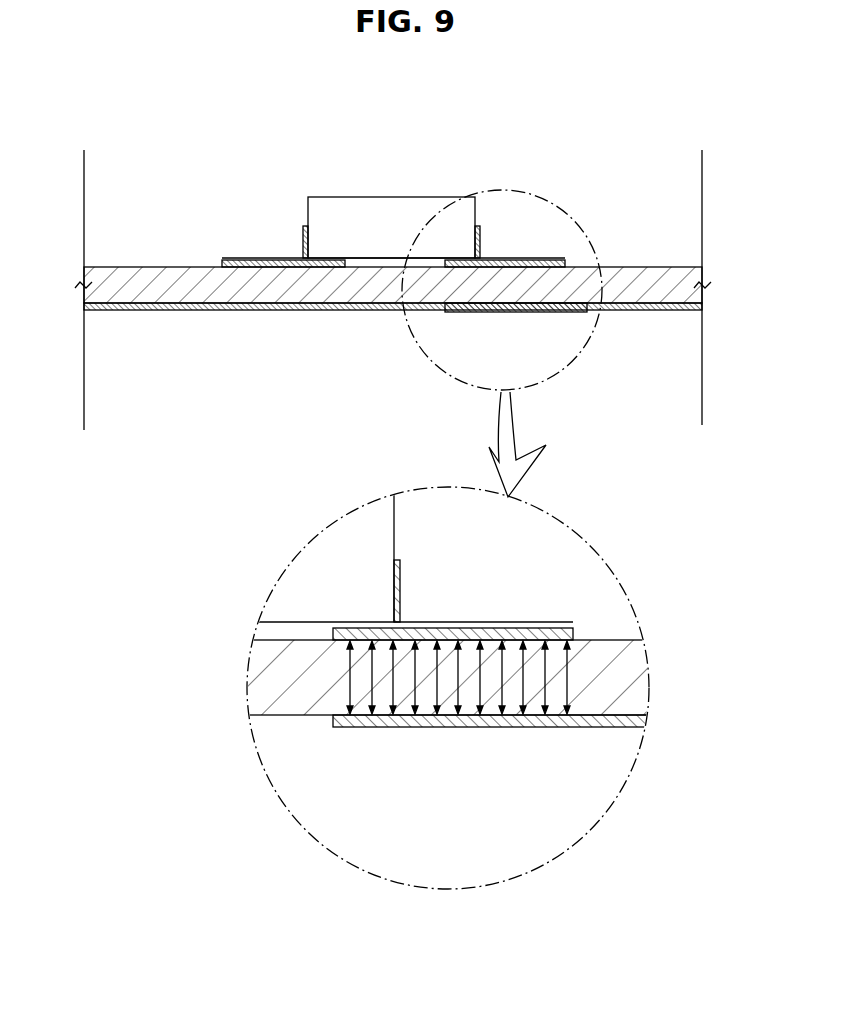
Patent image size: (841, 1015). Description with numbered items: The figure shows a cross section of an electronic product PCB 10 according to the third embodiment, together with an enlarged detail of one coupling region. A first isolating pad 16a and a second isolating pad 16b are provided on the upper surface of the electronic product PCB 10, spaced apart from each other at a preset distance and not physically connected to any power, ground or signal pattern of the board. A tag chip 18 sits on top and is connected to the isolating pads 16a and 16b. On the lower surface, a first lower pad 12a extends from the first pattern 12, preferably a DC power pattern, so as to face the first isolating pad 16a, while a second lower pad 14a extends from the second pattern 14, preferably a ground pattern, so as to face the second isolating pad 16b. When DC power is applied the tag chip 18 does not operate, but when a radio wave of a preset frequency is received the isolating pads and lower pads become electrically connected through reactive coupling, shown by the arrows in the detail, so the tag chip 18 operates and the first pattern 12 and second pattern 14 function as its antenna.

The electronic product PCB 10 is at (258, 470).
The first pattern 12 is at (143, 313).
The first lower pad 12a is at (336, 325).
The second pattern 14 is at (620, 312).
The lower pad 14a is at (587, 325).
The first isolating pad 16a is at (263, 260).
The second isolating pad 16b is at (523, 262).
The tag chip 18 is at (374, 196).